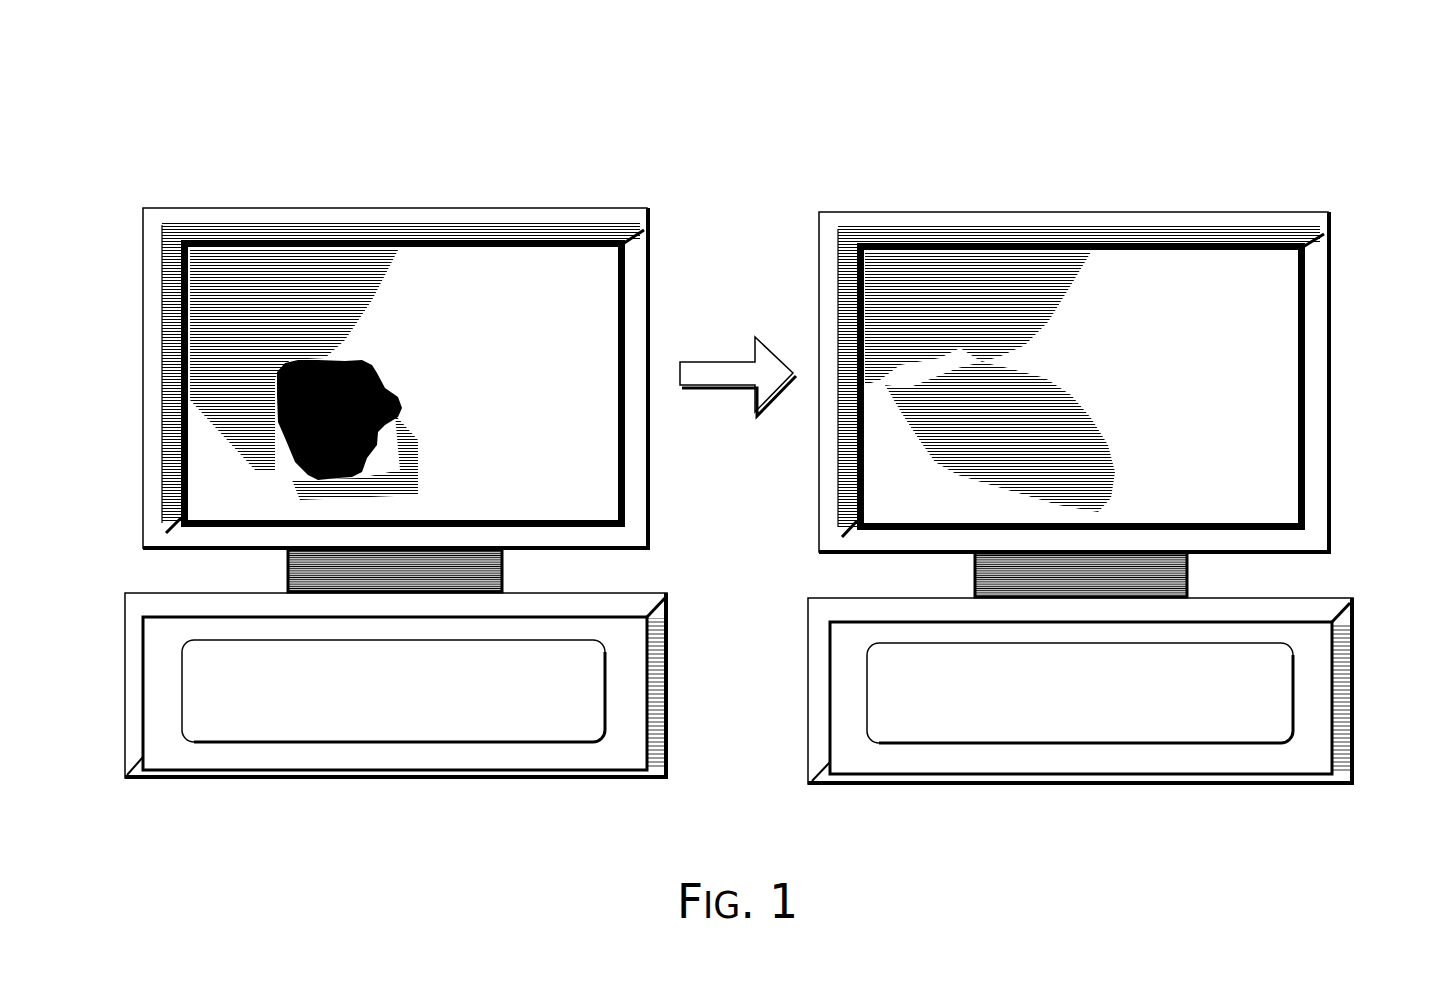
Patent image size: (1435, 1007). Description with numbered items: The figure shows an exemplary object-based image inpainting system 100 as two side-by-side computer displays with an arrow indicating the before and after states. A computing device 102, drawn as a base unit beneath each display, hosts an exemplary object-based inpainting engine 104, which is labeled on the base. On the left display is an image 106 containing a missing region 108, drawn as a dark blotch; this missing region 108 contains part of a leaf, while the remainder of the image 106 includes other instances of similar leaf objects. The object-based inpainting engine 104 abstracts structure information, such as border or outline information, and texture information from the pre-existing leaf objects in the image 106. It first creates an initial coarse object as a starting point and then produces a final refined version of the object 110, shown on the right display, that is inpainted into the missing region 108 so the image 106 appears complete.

The object-based image inpainting system 100 is at (501, 74).
The computing device 102 is at (670, 641).
The object-based inpainting engine 104 is at (374, 699).
The image 106 is at (404, 318).
The missing region 108 is at (397, 399).
The object 110 is at (1090, 404).